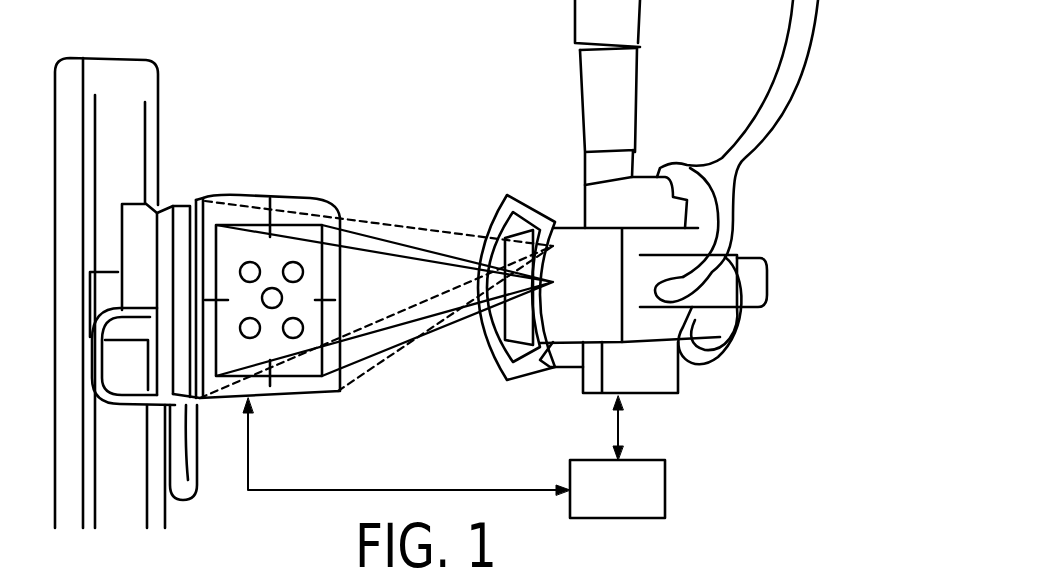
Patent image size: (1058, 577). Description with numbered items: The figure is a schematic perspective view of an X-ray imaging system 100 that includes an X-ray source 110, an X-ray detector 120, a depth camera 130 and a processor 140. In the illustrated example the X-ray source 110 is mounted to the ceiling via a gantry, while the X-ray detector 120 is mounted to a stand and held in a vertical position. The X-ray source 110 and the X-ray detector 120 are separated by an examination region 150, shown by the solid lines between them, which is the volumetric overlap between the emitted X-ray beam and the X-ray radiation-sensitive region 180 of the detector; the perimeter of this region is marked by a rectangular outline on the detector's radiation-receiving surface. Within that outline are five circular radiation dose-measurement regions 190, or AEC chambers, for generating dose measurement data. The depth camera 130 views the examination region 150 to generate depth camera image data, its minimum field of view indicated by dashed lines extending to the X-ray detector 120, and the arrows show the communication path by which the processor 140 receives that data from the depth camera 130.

The X-ray imaging system 100 is at (403, 70).
The X-ray source 110 is at (553, 282).
The X-ray detector 120 is at (285, 205).
The depth camera 130 is at (560, 246).
The processor 140 is at (454, 457).
The examination region 150 is at (397, 297).
The X-ray radiation-sensitive region 180 is at (337, 363).
The radiation dose-measurement regions 190 is at (254, 281).